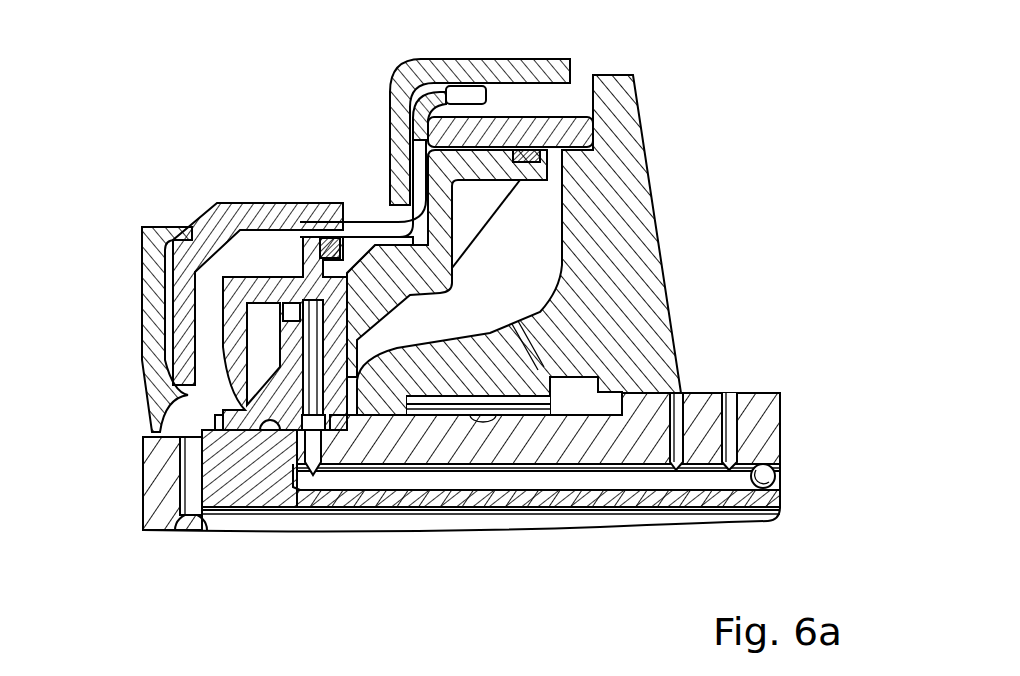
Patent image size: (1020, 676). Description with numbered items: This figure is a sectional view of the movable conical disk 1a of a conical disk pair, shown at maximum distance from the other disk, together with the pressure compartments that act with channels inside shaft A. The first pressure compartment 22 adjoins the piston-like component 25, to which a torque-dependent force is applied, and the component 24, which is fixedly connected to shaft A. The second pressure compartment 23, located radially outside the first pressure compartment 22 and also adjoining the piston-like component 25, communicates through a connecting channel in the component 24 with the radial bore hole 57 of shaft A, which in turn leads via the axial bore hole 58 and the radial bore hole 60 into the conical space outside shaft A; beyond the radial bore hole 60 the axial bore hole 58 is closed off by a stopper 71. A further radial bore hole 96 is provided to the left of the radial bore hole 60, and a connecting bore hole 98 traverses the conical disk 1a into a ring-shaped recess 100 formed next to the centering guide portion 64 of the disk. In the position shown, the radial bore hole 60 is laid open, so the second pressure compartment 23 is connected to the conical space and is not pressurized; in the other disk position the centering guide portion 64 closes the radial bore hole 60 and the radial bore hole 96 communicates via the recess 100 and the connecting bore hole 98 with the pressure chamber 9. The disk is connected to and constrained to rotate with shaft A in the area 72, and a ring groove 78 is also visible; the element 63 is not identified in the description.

The conical disk 1a is at (630, 226).
The pressure chamber 9 is at (530, 243).
The first pressure compartment 22 is at (190, 418).
The second pressure compartment 23 is at (370, 250).
The component 24 is at (388, 157).
The piston-like component 25 is at (223, 360).
The radial bore hole 57 is at (317, 450).
The axial bore hole 58 is at (607, 478).
The radial bore hole 60 is at (737, 455).
The gap 63 is at (373, 412).
The centering guide portion 64 is at (657, 380).
The stopper 71 is at (776, 478).
The area 72 is at (518, 410).
The ring groove 78 is at (303, 425).
The radial bore hole 96 is at (683, 448).
The connecting bore hole 98 is at (530, 338).
The ring-shaped recess 100 is at (583, 386).
The shaft A is at (770, 425).